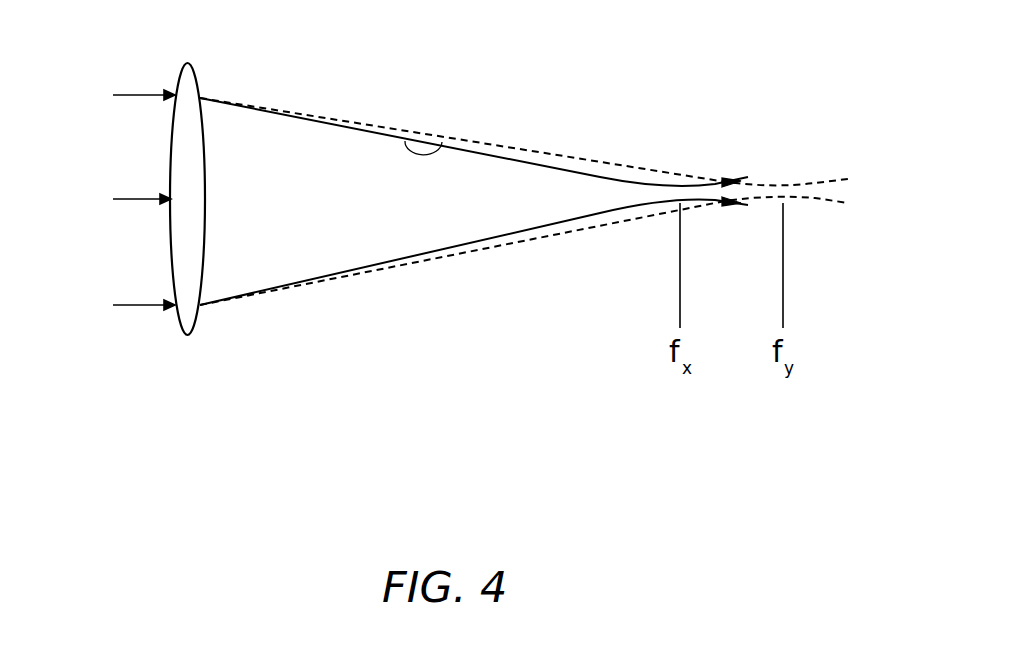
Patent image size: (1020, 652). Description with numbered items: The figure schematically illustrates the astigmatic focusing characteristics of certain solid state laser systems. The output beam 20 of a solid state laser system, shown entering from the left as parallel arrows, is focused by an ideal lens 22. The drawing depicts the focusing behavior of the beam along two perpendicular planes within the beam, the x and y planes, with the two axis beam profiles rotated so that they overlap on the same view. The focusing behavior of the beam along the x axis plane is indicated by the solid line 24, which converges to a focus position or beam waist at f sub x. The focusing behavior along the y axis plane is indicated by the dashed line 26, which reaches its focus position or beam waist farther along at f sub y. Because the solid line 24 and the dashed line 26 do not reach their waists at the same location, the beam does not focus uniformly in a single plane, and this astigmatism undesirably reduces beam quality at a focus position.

The output beam 20 is at (113, 200).
The ideal lens 22 is at (185, 82).
The solid line 24 is at (441, 150).
The dashed line 26 is at (553, 155).